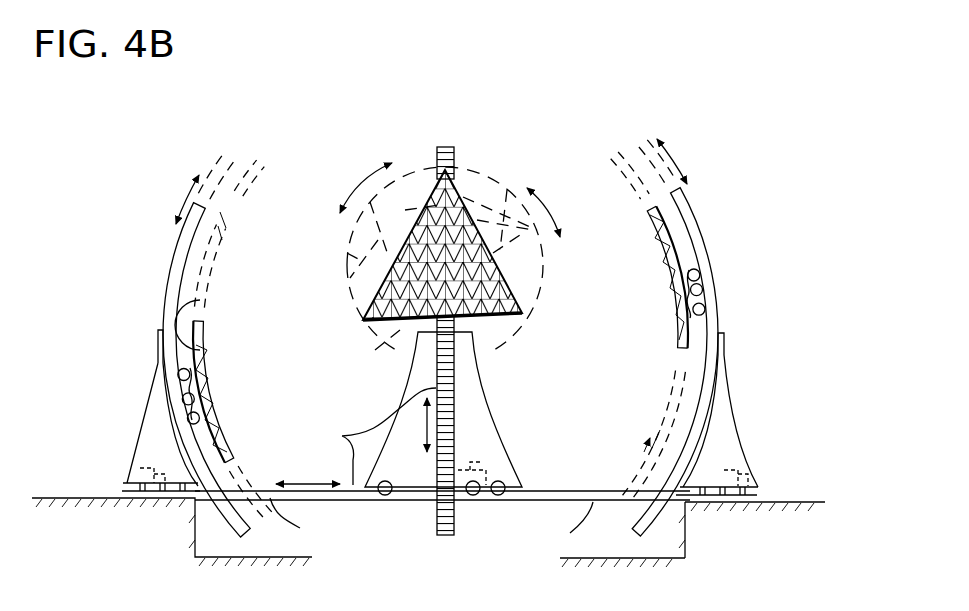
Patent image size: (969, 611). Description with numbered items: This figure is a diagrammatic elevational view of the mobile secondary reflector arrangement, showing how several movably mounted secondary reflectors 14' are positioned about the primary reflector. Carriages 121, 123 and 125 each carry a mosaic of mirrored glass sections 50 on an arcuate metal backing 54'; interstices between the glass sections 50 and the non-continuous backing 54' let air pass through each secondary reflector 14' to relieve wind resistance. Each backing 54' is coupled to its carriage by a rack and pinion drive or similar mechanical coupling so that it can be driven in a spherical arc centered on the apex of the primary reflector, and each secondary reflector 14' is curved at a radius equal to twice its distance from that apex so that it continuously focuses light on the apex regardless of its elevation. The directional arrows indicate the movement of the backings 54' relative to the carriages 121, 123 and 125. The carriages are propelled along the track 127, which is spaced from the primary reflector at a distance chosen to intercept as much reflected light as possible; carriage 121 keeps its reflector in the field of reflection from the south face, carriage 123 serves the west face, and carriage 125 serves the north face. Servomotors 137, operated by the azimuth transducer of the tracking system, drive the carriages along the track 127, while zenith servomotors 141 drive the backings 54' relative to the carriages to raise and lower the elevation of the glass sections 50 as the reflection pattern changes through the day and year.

The secondary reflector 14' is at (431, 336).
The backing 54' is at (440, 337).
The mirrored glass sections 50 is at (200, 370).
The zenith servomotors 141 is at (186, 394).
The carriage 121 is at (158, 364).
The carriage 123 is at (486, 397).
The carriage 125 is at (732, 396).
The track 127 is at (643, 515).
The servomotors 137 is at (144, 468).